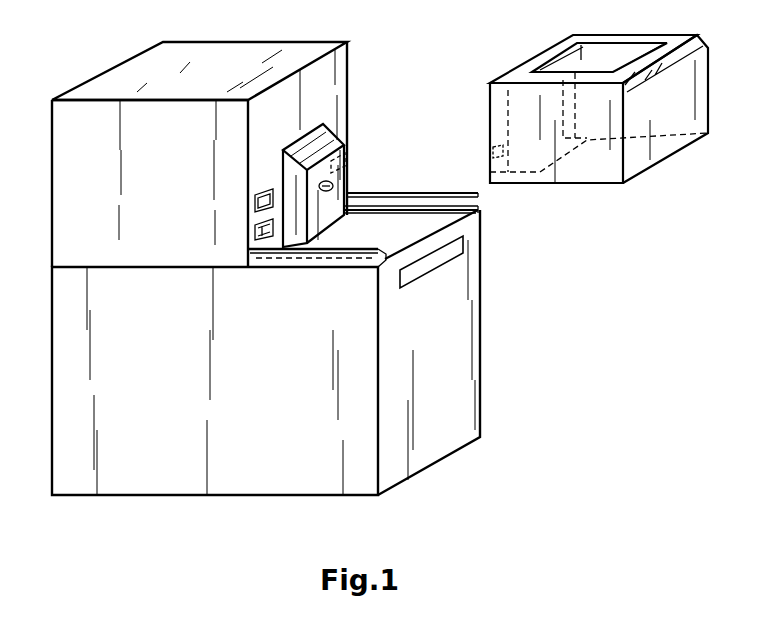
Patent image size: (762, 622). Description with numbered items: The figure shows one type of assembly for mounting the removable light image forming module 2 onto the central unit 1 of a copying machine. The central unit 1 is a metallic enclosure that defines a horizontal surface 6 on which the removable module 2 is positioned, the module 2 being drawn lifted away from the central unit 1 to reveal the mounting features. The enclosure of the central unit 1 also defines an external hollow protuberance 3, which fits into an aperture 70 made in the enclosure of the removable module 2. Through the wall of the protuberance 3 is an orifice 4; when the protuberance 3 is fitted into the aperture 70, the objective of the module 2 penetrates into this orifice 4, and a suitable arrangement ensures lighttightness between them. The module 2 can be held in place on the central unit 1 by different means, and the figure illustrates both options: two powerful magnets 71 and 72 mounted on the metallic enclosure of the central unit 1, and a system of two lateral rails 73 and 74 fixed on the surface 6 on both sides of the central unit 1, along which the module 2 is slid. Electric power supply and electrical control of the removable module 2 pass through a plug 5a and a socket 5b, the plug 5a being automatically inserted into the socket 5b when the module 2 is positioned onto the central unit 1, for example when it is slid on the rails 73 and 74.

The central unit 1 is at (62, 291).
The removable module 2 is at (690, 88).
The external hollow protuberance 3 is at (318, 150).
The orifice 4 is at (333, 183).
The plug 5a is at (258, 236).
The socket 5b is at (493, 152).
The horizontal surface 6 is at (405, 222).
The aperture 70 is at (510, 116).
The magnet 71 is at (258, 203).
The magnet 72 is at (346, 160).
The lateral rail 73 is at (322, 262).
The lateral rail 74 is at (483, 196).